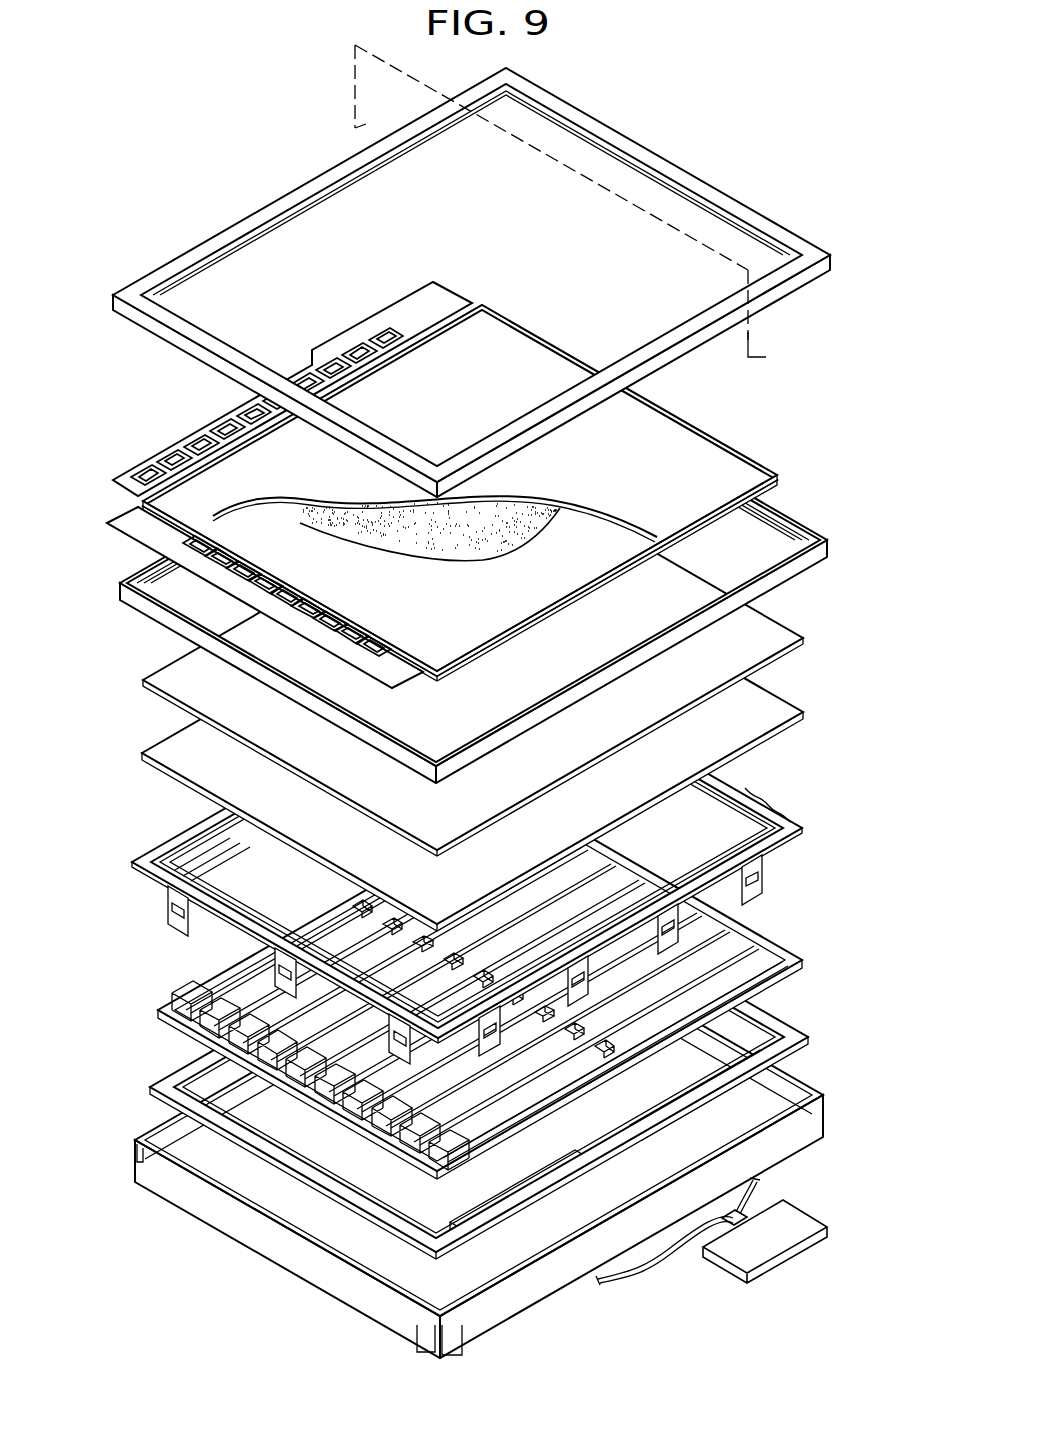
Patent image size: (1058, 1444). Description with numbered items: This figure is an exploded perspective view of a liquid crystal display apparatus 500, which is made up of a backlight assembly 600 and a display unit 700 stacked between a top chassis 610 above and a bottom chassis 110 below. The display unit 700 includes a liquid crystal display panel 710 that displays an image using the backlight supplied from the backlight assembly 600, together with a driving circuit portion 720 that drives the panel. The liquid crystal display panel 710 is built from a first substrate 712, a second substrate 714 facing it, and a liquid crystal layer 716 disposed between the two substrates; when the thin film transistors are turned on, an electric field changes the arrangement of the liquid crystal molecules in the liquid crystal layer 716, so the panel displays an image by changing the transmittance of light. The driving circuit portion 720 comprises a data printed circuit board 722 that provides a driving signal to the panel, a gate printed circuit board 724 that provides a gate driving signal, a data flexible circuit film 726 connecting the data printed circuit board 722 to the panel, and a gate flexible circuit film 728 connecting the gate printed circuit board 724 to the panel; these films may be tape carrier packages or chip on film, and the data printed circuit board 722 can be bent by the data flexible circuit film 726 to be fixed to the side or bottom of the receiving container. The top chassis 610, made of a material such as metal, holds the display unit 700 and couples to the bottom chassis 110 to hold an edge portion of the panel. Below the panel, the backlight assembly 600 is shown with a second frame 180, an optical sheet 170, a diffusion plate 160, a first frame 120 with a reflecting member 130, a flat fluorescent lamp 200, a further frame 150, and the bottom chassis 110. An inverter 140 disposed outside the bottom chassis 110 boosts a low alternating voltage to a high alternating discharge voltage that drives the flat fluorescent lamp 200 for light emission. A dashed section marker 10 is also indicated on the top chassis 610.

The liquid crystal display apparatus 500 is at (331, 128).
The section indicator (portion shown in FIG. 10) 10 is at (369, 123).
The top chassis 610 is at (172, 238).
The display unit 700 is at (150, 435).
The liquid crystal display panel 710 is at (750, 430).
The first substrate 712 is at (530, 590).
The second substrate 714 is at (680, 512).
The liquid crystal layer 716 is at (560, 497).
The driving circuit portion 720 is at (107, 508).
The data printed circuit board 722 is at (330, 355).
The gate printed circuit board 724 is at (150, 532).
The data flexible circuit film 726 is at (390, 340).
The gate flexible circuit film 728 is at (150, 572).
The backlight assembly 600 is at (833, 1250).
The second frame 180 is at (797, 505).
The optical sheet 170 is at (153, 655).
The diffusion plate 160 is at (150, 728).
The first frame 120 is at (427, 858).
The reflecting member 130 is at (213, 847).
The flat fluorescent lamp 200 is at (150, 960).
The lamp supporting frame 150 is at (150, 1050).
The bottom chassis 110 is at (140, 1103).
The inverter 140 is at (760, 1250).